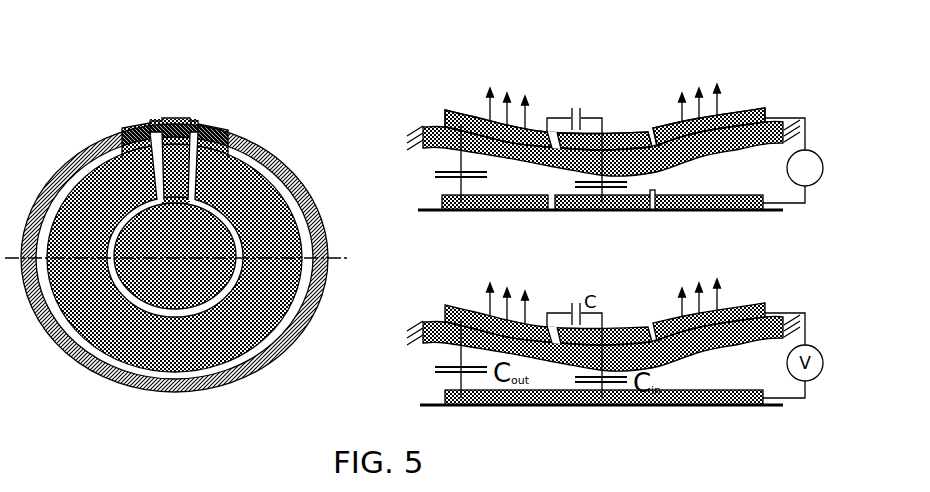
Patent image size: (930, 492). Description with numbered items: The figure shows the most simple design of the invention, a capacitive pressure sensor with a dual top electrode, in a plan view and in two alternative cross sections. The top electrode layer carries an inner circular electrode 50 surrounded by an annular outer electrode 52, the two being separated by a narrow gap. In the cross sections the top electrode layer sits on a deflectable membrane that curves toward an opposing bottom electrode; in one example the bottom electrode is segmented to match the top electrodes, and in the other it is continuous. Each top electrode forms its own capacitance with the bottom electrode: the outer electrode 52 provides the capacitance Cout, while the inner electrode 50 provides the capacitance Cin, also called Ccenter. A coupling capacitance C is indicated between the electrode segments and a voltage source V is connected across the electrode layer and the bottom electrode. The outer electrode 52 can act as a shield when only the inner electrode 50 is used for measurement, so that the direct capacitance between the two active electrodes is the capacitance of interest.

The inner circular electrode 50 is at (198, 230).
The annular outer electrode 52 is at (112, 177).
The coupling capacitor C is at (574, 114).
The capacitance associated with the outer electrode Cout is at (482, 164).
The capacitance associated with the central electrode Cin is at (618, 168).
The voltage source V is at (793, 160).